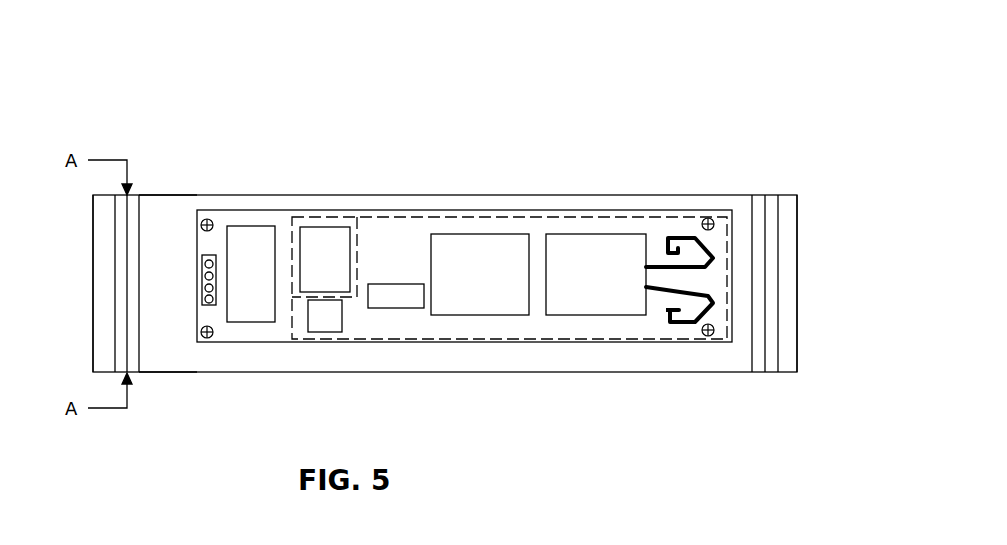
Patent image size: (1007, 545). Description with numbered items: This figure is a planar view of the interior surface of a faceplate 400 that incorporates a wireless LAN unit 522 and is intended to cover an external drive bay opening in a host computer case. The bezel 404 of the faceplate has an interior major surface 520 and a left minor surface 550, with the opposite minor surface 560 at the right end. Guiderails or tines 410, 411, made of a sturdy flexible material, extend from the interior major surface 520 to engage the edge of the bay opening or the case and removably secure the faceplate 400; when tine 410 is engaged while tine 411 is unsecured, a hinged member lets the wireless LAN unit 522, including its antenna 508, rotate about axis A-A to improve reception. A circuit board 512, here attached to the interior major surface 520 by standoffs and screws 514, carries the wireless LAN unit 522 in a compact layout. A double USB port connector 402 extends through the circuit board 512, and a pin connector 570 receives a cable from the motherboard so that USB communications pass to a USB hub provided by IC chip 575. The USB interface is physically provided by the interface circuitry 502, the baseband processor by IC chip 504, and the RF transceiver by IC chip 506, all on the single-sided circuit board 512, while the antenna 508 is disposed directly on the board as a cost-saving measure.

The faceplate 400 is at (756, 105).
The double USB port connector 402 is at (248, 243).
The bezel 404 is at (463, 353).
The tine 410 is at (135, 205).
The tine 411 is at (770, 212).
The USB interface circuitry 502 is at (325, 258).
The IC chip 504 is at (479, 248).
The IC chip 506 is at (612, 250).
The antenna 508 is at (680, 292).
The circuit board 512 is at (415, 317).
The circuit board 514 is at (205, 340).
The interior major surface 520 is at (167, 280).
The wireless LAN unit 522 is at (710, 278).
The left minor surface 550 is at (93, 274).
The right end 560 is at (798, 296).
The pin connector 570 is at (208, 265).
The IC chip 575 is at (325, 315).